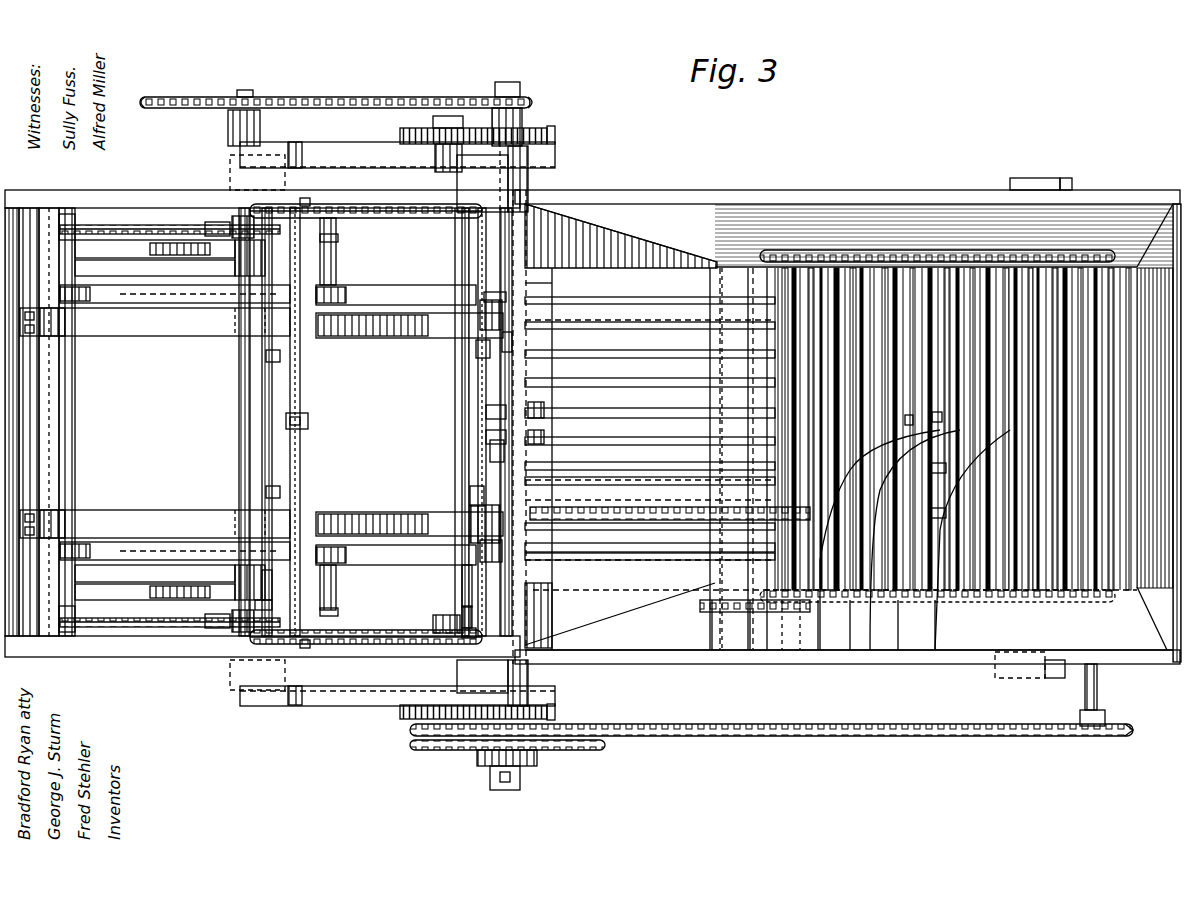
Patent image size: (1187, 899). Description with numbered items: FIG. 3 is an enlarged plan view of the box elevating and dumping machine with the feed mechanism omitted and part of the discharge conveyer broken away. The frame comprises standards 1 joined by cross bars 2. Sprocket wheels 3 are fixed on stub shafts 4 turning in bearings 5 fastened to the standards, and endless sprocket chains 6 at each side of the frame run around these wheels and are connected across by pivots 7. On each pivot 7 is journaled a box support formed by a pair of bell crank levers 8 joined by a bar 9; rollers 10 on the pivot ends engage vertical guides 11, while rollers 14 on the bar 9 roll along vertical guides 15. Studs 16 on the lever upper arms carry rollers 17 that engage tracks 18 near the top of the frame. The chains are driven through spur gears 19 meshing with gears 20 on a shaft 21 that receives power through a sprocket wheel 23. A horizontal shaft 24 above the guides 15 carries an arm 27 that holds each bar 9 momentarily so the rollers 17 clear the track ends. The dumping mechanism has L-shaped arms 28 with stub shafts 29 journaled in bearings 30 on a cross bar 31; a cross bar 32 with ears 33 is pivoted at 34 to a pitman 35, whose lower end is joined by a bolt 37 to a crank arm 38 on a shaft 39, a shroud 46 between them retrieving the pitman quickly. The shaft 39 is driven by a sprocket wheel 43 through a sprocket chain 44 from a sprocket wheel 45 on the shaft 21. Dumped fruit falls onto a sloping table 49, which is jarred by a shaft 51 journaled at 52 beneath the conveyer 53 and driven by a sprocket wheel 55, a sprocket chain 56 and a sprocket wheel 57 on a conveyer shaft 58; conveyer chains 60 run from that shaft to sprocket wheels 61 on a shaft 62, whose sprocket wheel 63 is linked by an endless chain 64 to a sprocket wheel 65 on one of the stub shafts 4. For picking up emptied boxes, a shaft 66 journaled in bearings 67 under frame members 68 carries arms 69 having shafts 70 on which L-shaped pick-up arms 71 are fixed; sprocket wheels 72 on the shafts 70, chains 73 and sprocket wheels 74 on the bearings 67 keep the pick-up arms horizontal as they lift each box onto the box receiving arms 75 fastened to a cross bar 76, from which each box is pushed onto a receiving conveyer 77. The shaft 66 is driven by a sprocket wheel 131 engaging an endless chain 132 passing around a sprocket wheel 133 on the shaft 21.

The standards 1 is at (266, 155).
The cross bars 2 is at (397, 423).
The sprocket wheels 3 is at (330, 672).
The stub shafts 4 is at (448, 118).
The bearings 5 is at (307, 148).
The endless sprocket chains 6 is at (358, 204).
The pivots 7 is at (468, 625).
The bell crank levers 8 is at (390, 288).
The bar 9 is at (243, 392).
The rollers 10 is at (272, 587).
The vertical guides 11 is at (272, 604).
The rollers 14 is at (268, 355).
The vertical guides 15 is at (302, 360).
The studs 16 is at (330, 204).
The rollers 17 is at (337, 257).
The tracks 18 is at (160, 226).
The spur gears 19 is at (406, 128).
The gears 20 is at (548, 133).
The shaft 21 is at (510, 82).
The sprocket wheel 23 is at (588, 748).
The horizontal shaft 24 is at (300, 387).
The arm 27 is at (308, 421).
The L-shaped arms 28 is at (390, 330).
The stub shafts 29 is at (478, 306).
The bearings 30 is at (490, 292).
The cross bar 31 is at (508, 280).
The cross bar 32 is at (480, 382).
The ears 33 is at (490, 440).
The pivot 34 is at (538, 402).
The pitman 35 is at (600, 418).
The bolt 37 is at (938, 412).
The crank arm 38 is at (818, 652).
The shaft 39 is at (850, 652).
The sprocket wheel 43 is at (935, 652).
The sprocket chain 44 is at (898, 652).
The sprocket wheel 45 is at (470, 512).
The shroud 46 is at (910, 415).
The table 49 is at (605, 300).
The shaft 51 is at (720, 655).
The journal 52 is at (712, 650).
The conveyer 53 is at (970, 212).
The sprocket wheel 55 is at (690, 600).
The sprocket chain 56 is at (750, 652).
The sprocket wheel 57 is at (800, 652).
The conveyer shaft 58 is at (782, 652).
The conveyer chains 60 is at (905, 250).
The sprocket wheels 61 is at (1150, 655).
The shaft 62 is at (1100, 692).
The sprocket wheel 63 is at (1135, 730).
The endless chain 64 is at (905, 738).
The sprocket wheel 65 is at (410, 728).
The shaft 66 is at (245, 92).
The bearings 67 is at (235, 218).
The frame members 68 is at (120, 190).
The arms 69 is at (110, 262).
The shafts 70 is at (67, 215).
The L-shaped box pick-up arms 71 is at (153, 298).
The sprocket wheels 72 is at (62, 640).
The endless chains 73 is at (177, 225).
The sprocket wheels 74 is at (215, 225).
The box receiving arms 75 is at (108, 336).
The cross bar 76 is at (45, 423).
The receiving conveyer 77 is at (14, 208).
The sprocket wheel 131 is at (143, 102).
The endless chain 132 is at (366, 97).
The sprocket wheel 133 is at (535, 102).